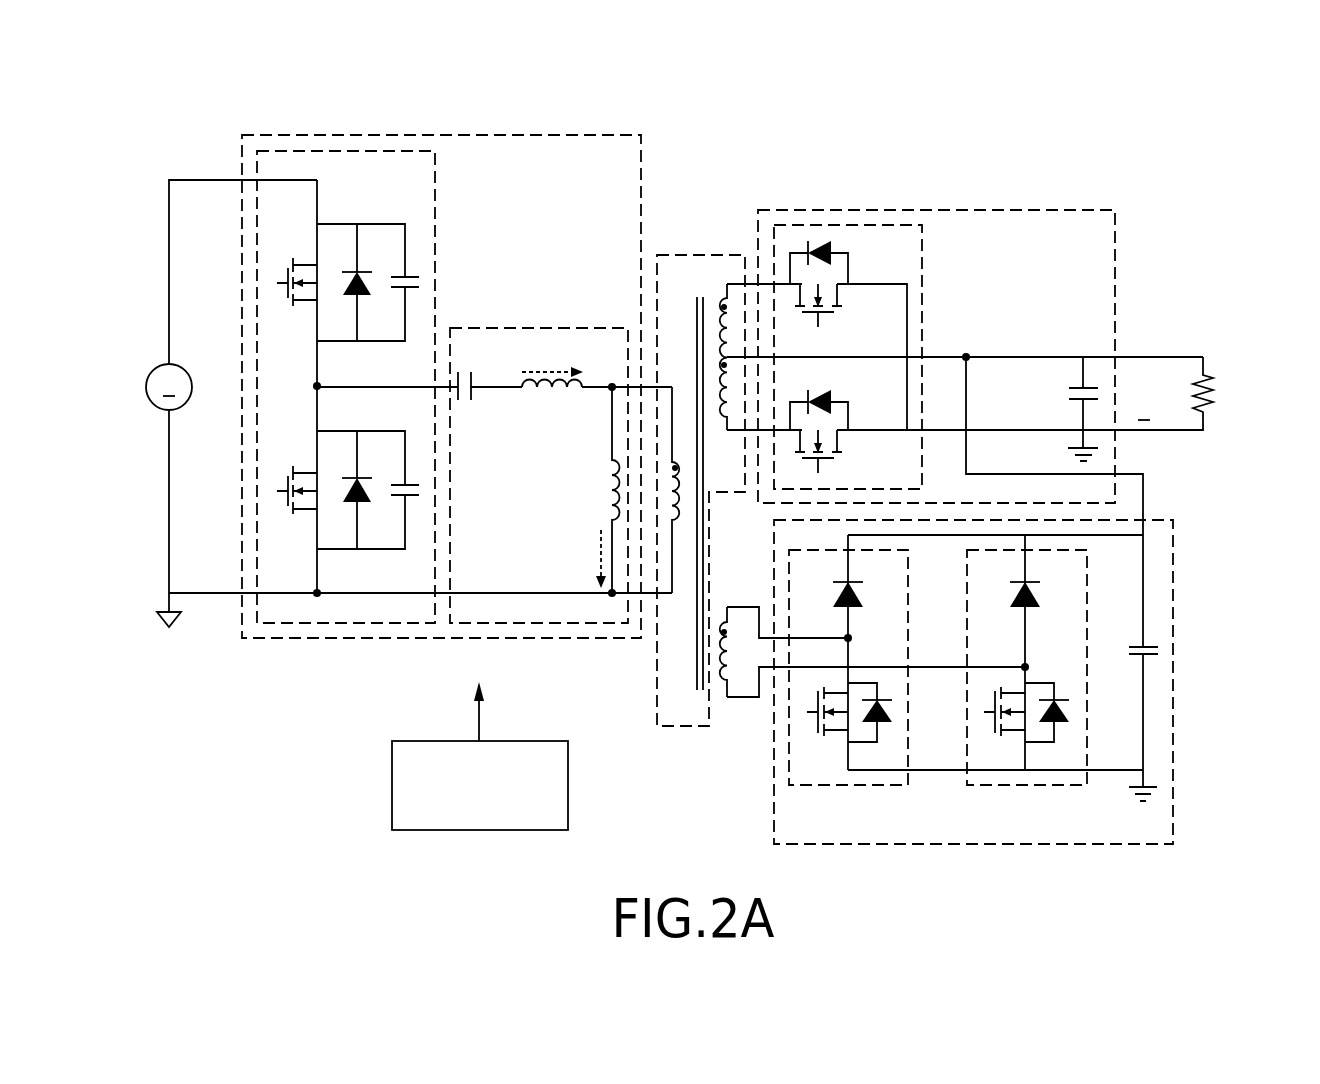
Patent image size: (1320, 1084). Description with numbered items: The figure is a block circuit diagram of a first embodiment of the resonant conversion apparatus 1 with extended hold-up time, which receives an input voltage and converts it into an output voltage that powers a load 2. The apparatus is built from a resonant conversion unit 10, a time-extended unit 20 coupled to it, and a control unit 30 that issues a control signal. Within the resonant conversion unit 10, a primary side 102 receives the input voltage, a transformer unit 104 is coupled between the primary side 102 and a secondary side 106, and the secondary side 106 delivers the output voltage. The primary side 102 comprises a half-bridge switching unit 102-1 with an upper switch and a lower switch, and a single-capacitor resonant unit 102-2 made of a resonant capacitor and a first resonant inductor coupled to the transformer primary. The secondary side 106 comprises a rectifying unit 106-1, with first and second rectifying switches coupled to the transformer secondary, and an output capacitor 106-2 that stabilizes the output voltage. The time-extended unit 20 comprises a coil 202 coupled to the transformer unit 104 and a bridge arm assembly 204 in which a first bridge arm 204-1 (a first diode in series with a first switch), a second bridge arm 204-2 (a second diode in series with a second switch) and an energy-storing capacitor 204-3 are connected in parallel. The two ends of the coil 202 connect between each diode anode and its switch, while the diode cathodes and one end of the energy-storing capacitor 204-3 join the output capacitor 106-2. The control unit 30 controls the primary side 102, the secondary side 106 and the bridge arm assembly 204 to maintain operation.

The resonant conversion apparatus 1 is at (677, 88).
The resonant conversion unit 10 is at (198, 628).
The primary side 102 is at (447, 137).
The switching unit 102-1 is at (435, 190).
The resonant unit 102-2 is at (538, 330).
The transformer unit 104 is at (699, 258).
The secondary side 106 is at (937, 218).
The rectifying unit 106-1 is at (922, 268).
The output capacitor 106-2 is at (1067, 393).
The load 2 is at (1215, 397).
The time-extended unit 20 is at (1196, 747).
The coil 202 is at (717, 618).
The bridge arm assembly 204 is at (1168, 590).
The first bridge arm 204-1 is at (848, 778).
The second bridge arm 204-2 is at (1025, 775).
The energy-storing capacitor 204-3 is at (1158, 653).
The control unit 30 is at (490, 748).